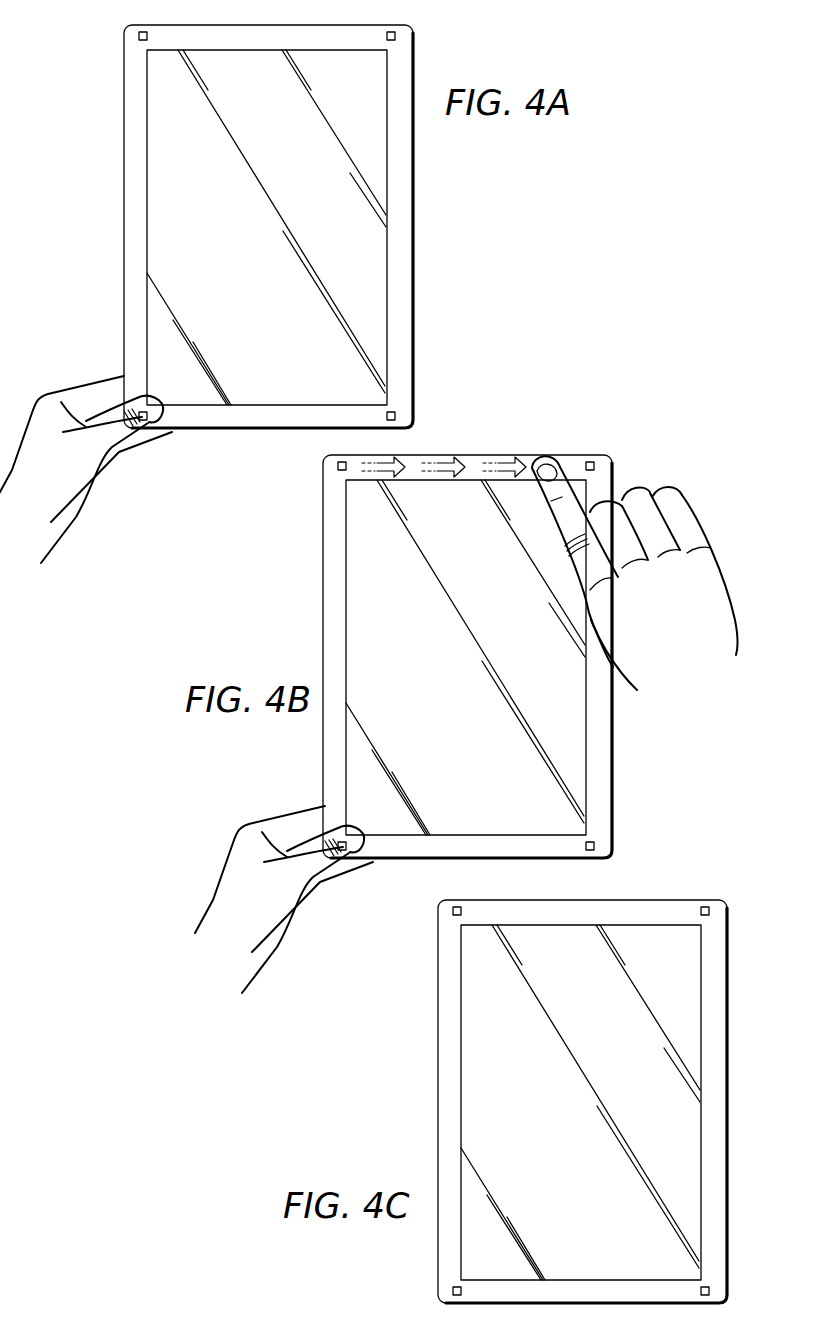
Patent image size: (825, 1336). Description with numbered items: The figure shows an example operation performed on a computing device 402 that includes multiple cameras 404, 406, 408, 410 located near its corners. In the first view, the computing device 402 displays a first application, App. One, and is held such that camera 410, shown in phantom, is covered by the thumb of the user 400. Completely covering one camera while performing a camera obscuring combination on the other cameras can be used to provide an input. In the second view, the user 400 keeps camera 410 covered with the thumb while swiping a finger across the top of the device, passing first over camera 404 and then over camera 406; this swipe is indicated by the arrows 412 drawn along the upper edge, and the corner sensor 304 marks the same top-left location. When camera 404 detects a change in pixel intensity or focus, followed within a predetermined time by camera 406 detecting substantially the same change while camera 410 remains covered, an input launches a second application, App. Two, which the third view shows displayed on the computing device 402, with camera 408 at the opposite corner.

In FIG. 4A, the corner touch sensor 304 is at (139, 36).
In FIG. 4A, the user 400 is at (80, 375).
In FIG. 4A, the computing device 402 is at (413, 222).
In FIG. 4B, the computing device 402 is at (613, 738).
In FIG. 4C, the computing device 402 is at (728, 1097).
In FIG. 4B, the camera 404 is at (338, 466).
In FIG. 4C, the camera 404 is at (453, 911).
In FIG. 4A, the camera 406 is at (395, 36).
In FIG. 4B, the camera 406 is at (594, 466).
In FIG. 4C, the camera 406 is at (709, 911).
In FIG. 4A, the camera 408 is at (395, 416).
In FIG. 4B, the camera 408 is at (594, 846).
In FIG. 4C, the camera 408 is at (709, 1291).
In FIG. 4A, the camera 410 is at (143, 421).
In FIG. 4B, the camera 410 is at (343, 838).
In FIG. 4C, the camera 410 is at (453, 1291).
In FIG. 4B, the swipe gesture arrows 412 is at (445, 471).